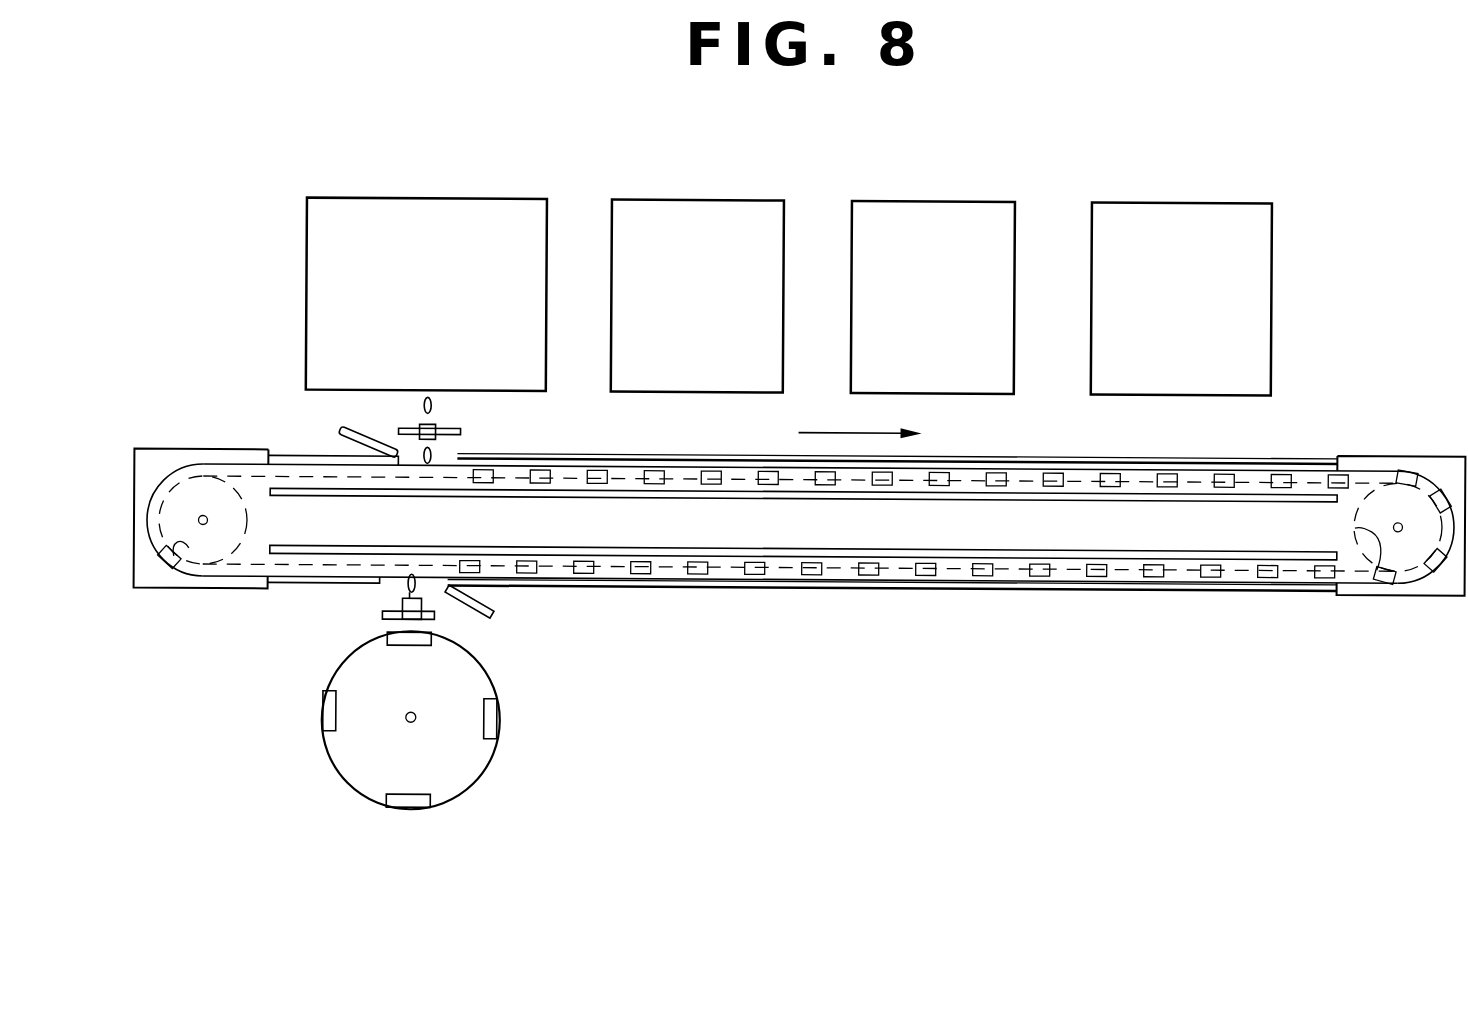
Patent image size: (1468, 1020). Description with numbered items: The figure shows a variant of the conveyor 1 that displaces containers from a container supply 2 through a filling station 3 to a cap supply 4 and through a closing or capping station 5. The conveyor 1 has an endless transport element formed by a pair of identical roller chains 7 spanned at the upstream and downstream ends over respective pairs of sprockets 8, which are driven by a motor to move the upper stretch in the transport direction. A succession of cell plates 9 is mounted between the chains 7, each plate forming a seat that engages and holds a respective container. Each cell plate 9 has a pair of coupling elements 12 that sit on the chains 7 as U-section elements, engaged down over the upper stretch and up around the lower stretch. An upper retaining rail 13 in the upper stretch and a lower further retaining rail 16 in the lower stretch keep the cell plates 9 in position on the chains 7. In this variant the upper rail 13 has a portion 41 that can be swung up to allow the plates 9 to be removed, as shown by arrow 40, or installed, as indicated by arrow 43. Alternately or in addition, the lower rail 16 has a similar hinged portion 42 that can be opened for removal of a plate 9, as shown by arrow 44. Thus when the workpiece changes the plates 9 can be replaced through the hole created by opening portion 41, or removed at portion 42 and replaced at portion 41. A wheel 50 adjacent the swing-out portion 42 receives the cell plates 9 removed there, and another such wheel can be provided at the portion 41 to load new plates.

The conveyor 1 is at (995, 602).
The container supply 2 is at (510, 197).
The filling station 3 is at (762, 197).
The cap supply 4 is at (998, 197).
The closing or capping station 5 is at (1205, 197).
The roller chains 7 is at (236, 478).
The sprockets 8 is at (189, 548).
The cell plates 9 is at (404, 426).
The coupling elements 12 is at (404, 619).
The upper retaining rail 13 is at (643, 455).
The lower further retaining rail 16 is at (678, 585).
The arrow 40 is at (437, 404).
The swing-up portion 41 is at (345, 431).
The hinged portion 42 is at (496, 602).
The arrow 43 is at (445, 452).
The arrow 44 is at (406, 587).
The wheel 50 is at (451, 721).